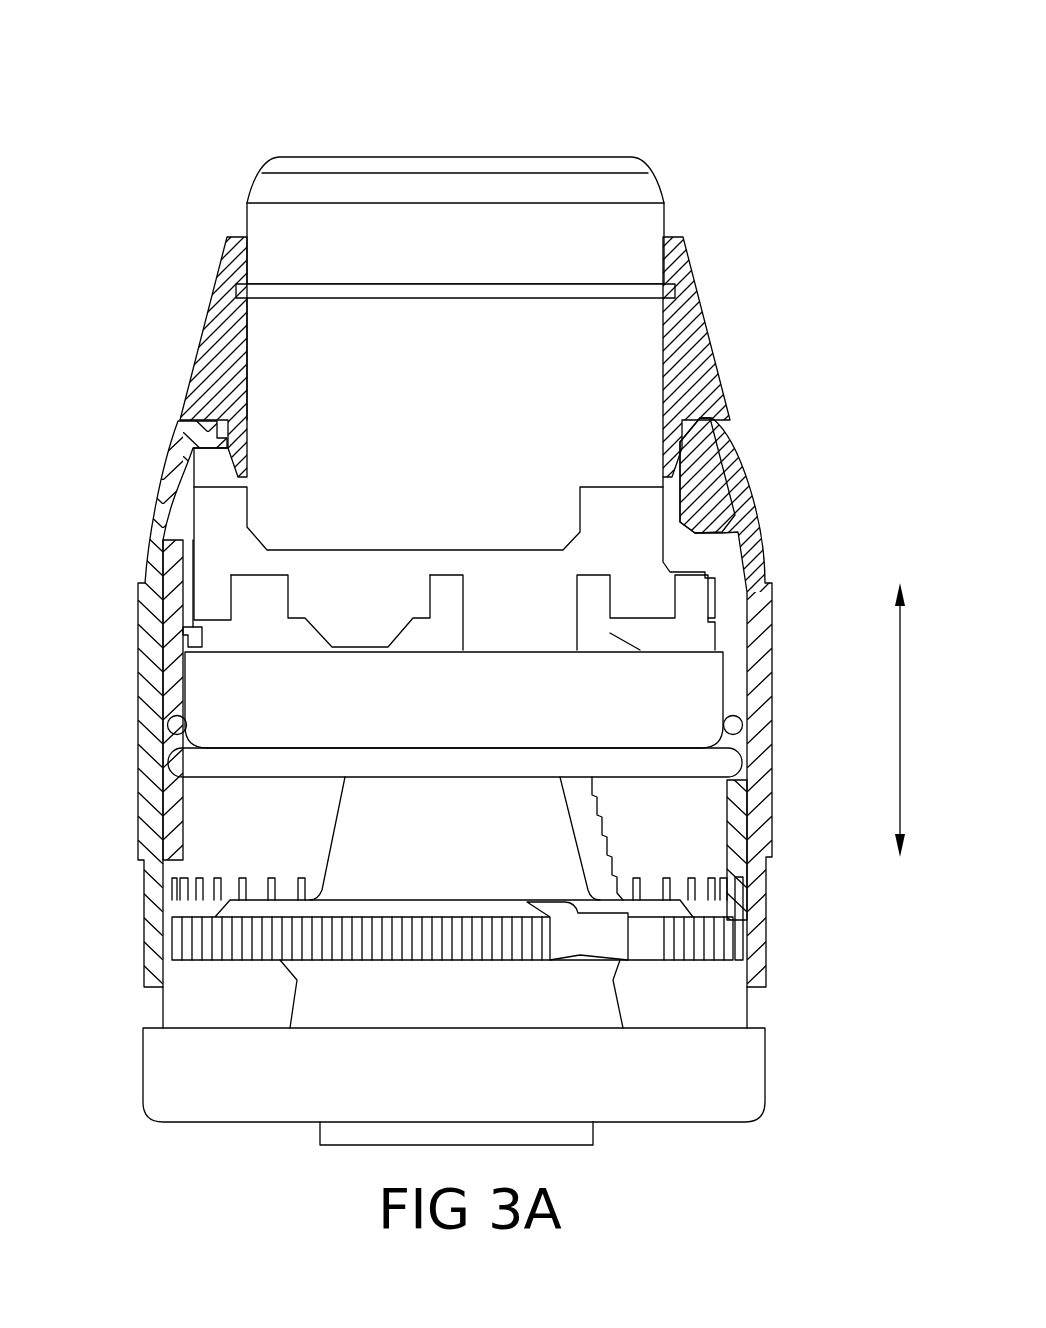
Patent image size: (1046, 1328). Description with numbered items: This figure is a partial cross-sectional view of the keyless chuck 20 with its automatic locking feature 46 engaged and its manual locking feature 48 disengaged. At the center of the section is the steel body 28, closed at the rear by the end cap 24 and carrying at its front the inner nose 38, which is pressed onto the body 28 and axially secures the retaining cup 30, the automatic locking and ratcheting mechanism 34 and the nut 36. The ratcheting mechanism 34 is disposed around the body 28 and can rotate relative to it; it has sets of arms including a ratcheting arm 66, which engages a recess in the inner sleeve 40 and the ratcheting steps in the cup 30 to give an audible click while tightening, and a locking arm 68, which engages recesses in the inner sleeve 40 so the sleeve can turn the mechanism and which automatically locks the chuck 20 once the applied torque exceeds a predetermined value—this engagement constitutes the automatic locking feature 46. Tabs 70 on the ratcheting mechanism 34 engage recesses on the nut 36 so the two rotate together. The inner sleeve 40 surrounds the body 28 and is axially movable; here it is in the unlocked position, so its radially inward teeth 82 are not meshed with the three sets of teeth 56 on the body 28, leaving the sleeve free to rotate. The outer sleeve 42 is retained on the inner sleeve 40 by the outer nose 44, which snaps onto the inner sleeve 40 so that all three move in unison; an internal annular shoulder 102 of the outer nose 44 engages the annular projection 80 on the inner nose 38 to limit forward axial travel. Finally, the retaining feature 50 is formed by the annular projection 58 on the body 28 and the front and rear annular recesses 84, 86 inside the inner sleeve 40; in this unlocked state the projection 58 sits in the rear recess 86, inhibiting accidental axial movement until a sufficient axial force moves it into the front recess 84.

The keyless chuck 20 is at (660, 88).
The end cap 24 is at (702, 1085).
The body 28 is at (575, 978).
The retaining cup 30 is at (260, 680).
The automatic locking and ratcheting mechanism 34 is at (203, 629).
The nut 36 is at (215, 507).
The inner nose 38 is at (342, 239).
The inner sleeve 40 is at (707, 505).
The outer sleeve 42 is at (735, 518).
The outer nose 44 is at (686, 357).
The automatic locking feature 46 is at (820, 537).
The manual locking feature 48 is at (138, 877).
The retaining feature 50 is at (807, 702).
The teeth 56 is at (243, 945).
The annular projection 58 is at (227, 763).
The ratcheting arm 66 is at (448, 603).
The locking arm 68 is at (592, 605).
The tabs 70 is at (260, 597).
The annular projection 80 is at (653, 295).
The teeth 82 is at (710, 902).
The front annular recess 84 is at (167, 723).
The rear annular recess 86 is at (170, 763).
The internal annular shoulder 102 is at (236, 313).